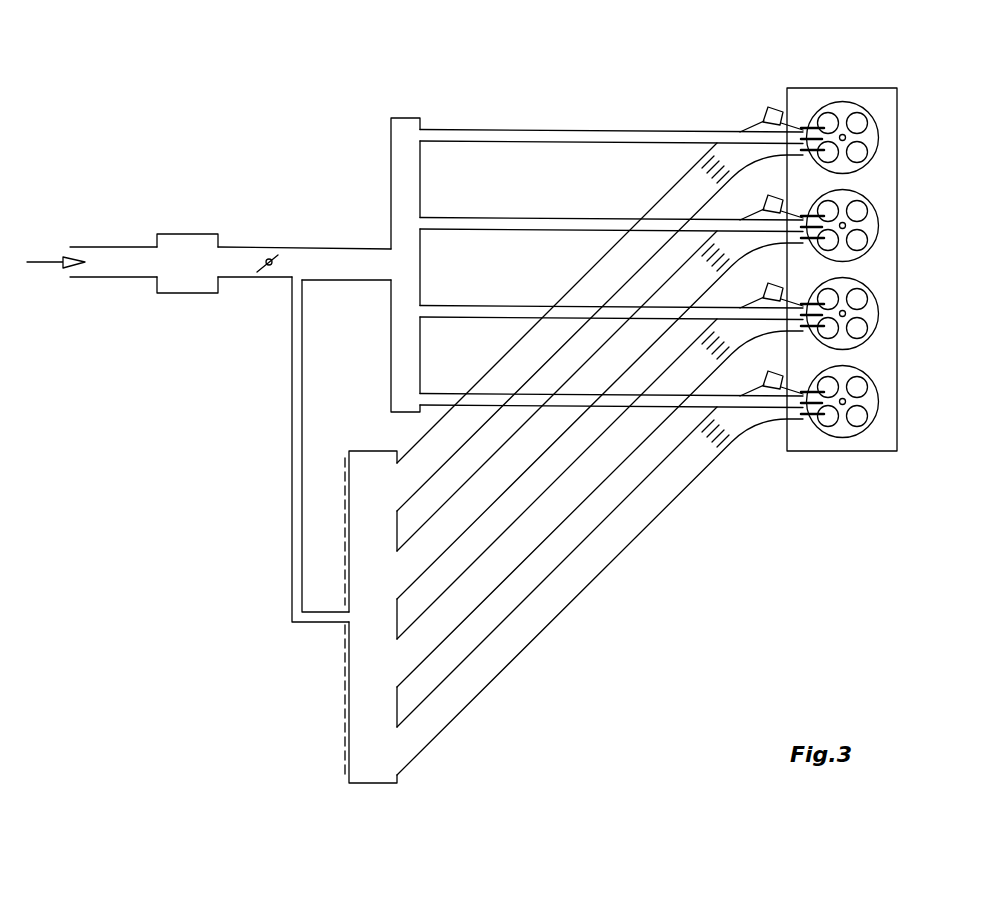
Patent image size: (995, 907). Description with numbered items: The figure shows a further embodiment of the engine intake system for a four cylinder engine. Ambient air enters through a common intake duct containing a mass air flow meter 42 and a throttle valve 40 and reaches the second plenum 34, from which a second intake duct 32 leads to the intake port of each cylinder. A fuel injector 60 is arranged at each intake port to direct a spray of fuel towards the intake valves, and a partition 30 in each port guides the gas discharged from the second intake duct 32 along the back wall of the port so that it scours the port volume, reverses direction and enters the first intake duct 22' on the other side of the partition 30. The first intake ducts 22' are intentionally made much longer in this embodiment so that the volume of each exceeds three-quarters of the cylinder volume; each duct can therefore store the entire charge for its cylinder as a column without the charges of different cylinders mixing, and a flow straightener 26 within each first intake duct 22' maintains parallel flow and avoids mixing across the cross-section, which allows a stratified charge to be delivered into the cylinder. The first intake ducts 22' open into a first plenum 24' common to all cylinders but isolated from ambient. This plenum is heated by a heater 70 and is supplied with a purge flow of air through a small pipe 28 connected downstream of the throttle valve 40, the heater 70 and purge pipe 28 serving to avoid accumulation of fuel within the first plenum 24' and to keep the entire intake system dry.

The first intake duct 22' is at (557, 435).
The first plenum 24' is at (351, 651).
The flow straightener 26 is at (728, 435).
The small pipe 28 is at (293, 445).
The partition 30 is at (807, 121).
The second intake duct 32 is at (726, 131).
The second plenum 34 is at (402, 140).
The throttle valve 40 is at (265, 258).
The mass air flow meter 42 is at (183, 245).
The fuel injector 60 is at (768, 112).
The heater 70 is at (343, 700).